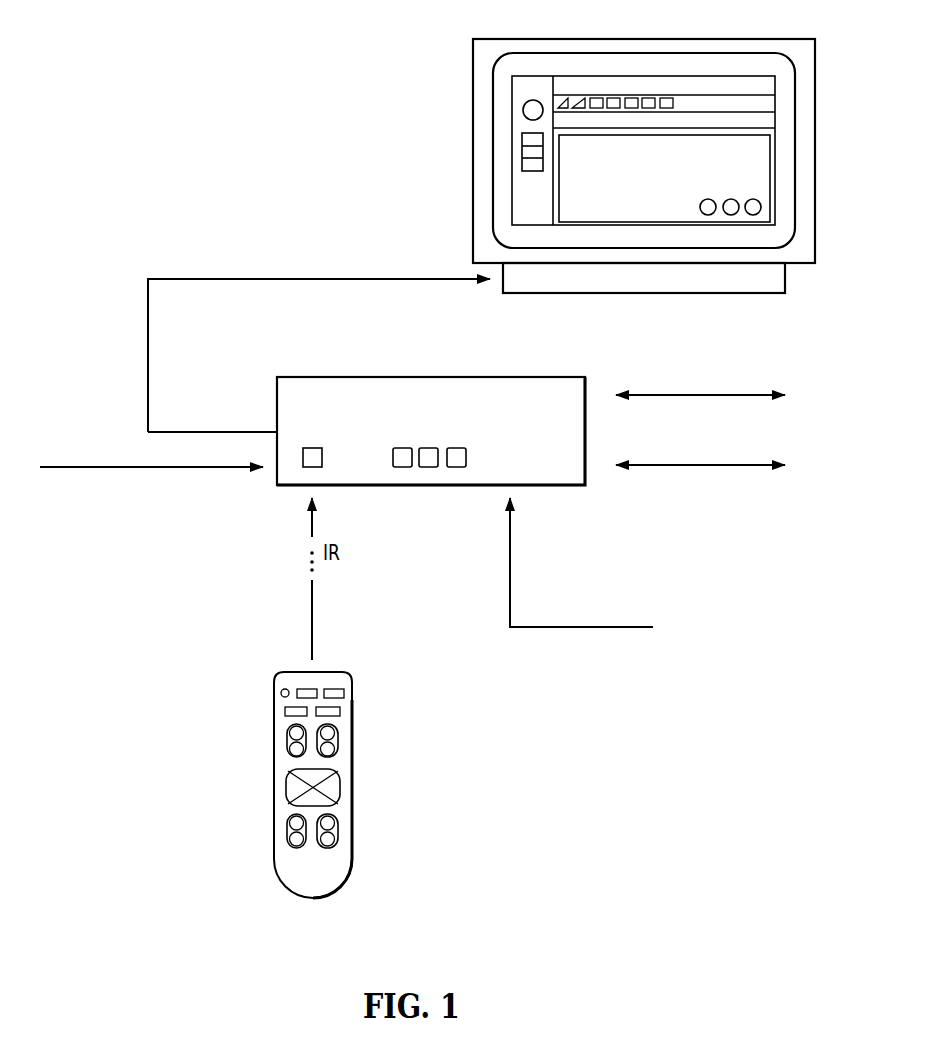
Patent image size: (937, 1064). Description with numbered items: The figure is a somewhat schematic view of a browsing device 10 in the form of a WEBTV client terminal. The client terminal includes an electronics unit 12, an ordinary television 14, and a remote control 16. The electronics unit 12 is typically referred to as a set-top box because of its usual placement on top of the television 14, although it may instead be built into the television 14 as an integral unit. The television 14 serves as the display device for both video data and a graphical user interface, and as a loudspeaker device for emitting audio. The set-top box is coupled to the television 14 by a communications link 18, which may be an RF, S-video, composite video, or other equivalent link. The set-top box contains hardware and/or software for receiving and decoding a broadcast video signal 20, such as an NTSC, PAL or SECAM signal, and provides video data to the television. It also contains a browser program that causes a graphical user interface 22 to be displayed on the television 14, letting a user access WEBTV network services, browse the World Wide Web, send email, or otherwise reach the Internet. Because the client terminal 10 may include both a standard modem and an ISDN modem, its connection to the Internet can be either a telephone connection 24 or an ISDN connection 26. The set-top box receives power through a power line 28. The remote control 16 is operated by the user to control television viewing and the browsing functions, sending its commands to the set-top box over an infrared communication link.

The browsing device 10 is at (233, 200).
The electronics unit 12 is at (563, 476).
The television 14 is at (815, 158).
The remote control 16 is at (341, 868).
The communications link 18 is at (148, 302).
The broadcast video signal 20 is at (231, 468).
The graphical user interface 22 is at (662, 74).
The telephone connection 24 is at (750, 393).
The ISDN connection 26 is at (740, 466).
The power line 28 is at (630, 627).